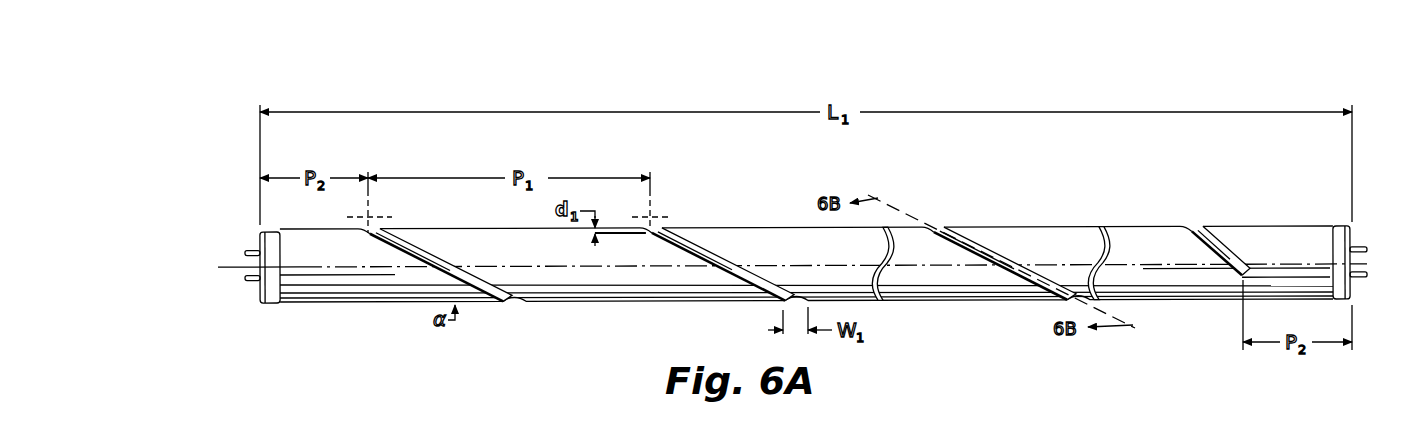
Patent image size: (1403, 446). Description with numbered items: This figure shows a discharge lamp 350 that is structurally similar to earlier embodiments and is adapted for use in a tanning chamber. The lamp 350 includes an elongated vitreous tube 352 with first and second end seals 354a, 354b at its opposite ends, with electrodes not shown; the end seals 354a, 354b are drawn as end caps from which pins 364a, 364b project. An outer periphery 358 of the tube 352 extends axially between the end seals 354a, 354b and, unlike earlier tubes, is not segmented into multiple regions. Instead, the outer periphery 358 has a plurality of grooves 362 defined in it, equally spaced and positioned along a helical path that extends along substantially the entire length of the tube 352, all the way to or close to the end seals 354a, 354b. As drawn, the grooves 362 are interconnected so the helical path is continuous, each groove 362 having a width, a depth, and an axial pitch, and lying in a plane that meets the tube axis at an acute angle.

The lamp 350 is at (1072, 102).
The elongated vitreous tube 352 is at (806, 235).
The first end seal 354a is at (273, 232).
The second end seal 354b is at (1345, 226).
The outer periphery 358 is at (1038, 229).
The grooves 362 is at (512, 304).
The first electrical pin 364a is at (250, 250).
The second electrical pin 364b is at (250, 282).